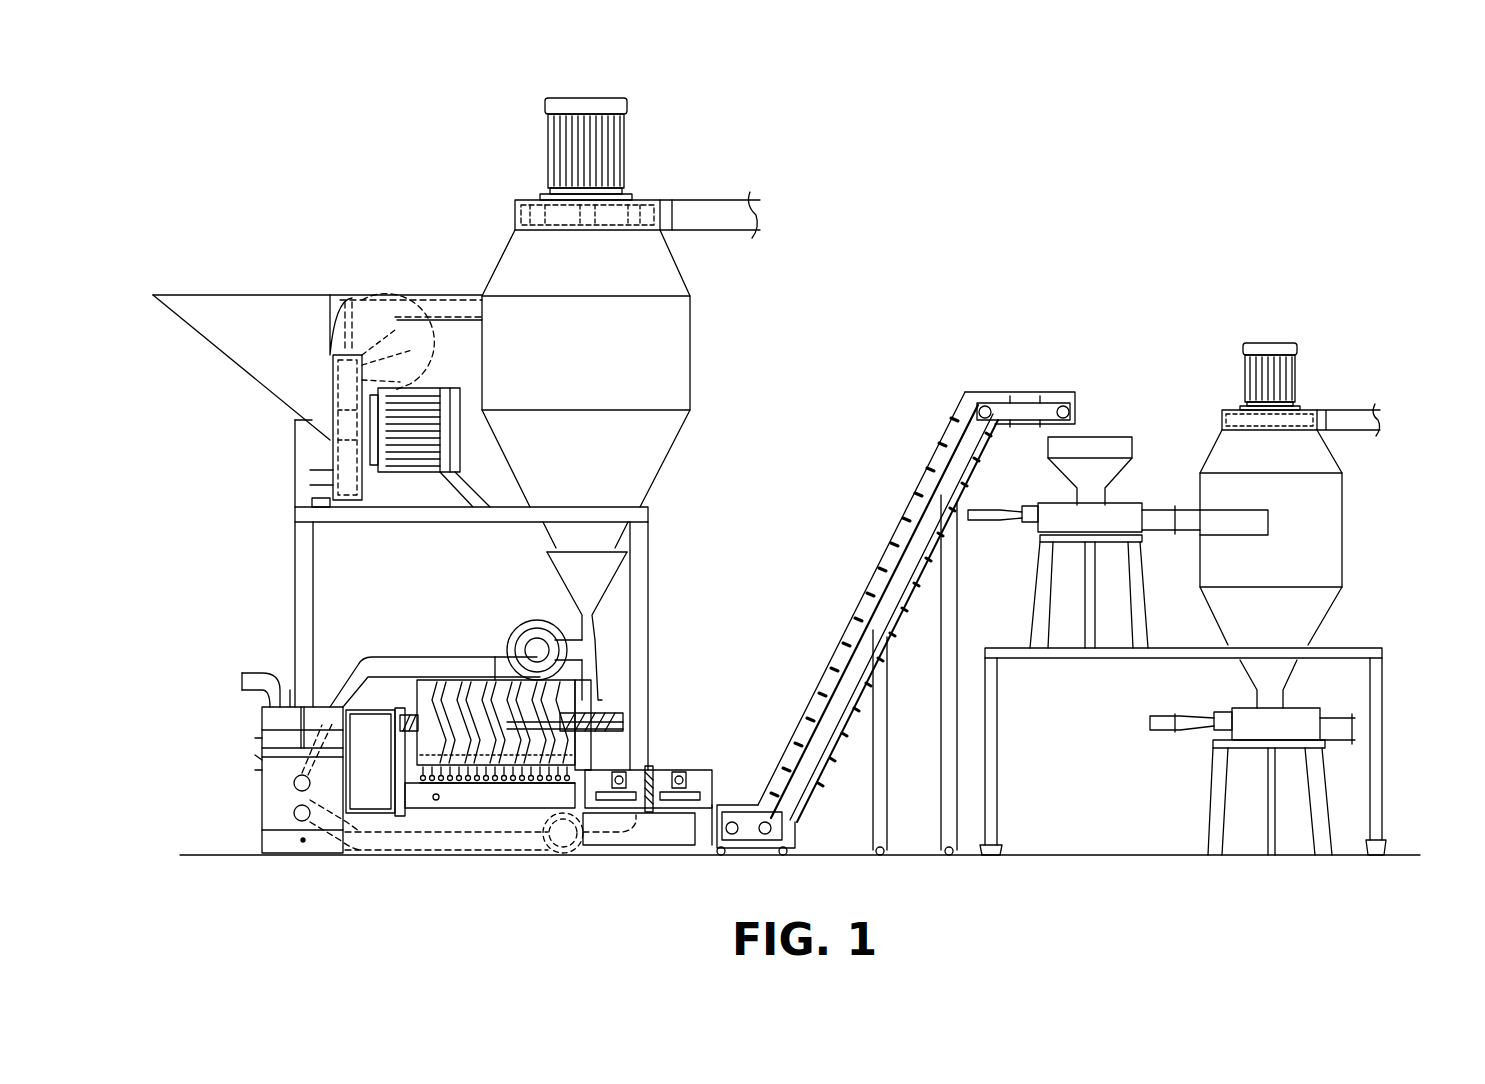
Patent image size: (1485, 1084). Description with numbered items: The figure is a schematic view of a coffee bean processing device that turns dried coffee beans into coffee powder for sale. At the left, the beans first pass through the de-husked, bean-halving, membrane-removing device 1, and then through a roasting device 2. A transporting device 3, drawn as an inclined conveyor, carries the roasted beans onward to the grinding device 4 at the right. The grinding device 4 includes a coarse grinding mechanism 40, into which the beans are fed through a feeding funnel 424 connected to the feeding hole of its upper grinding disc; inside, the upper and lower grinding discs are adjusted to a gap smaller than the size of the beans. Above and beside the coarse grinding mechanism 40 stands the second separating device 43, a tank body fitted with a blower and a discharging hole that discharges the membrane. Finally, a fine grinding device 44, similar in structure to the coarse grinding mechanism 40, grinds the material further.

The de-husked, bean-halving, membrane-removing device 1 is at (388, 226).
The roasting device 2 is at (240, 628).
The transporting device 3 is at (862, 528).
The grinding device 4 is at (1205, 350).
The coarse grinding mechanism 40 is at (1075, 636).
The feeding funnel 424 is at (1100, 440).
The second separating device 43 is at (1322, 548).
The fine grinding device 44 is at (1330, 790).